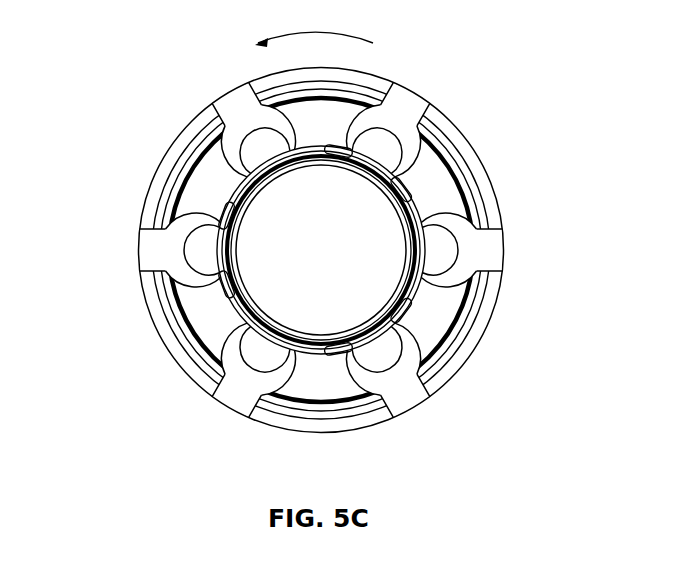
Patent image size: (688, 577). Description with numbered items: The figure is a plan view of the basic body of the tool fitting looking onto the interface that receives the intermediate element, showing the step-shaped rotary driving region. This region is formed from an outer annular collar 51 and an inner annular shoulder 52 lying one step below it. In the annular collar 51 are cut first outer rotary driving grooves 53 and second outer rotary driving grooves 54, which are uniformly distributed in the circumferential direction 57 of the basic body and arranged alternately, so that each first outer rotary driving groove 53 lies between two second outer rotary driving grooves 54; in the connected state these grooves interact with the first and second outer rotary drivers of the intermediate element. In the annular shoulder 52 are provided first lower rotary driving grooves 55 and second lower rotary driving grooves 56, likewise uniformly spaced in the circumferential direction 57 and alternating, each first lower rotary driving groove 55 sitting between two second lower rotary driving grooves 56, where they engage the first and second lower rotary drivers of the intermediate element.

The annular collar 51 is at (150, 162).
The annular shoulder 52 is at (446, 171).
The first outer rotary driving grooves 53 is at (231, 110).
The second outer rotary driving grooves 54 is at (404, 98).
The first lower rotary driving grooves 55 is at (280, 168).
The second lower rotary driving grooves 56 is at (362, 167).
The circumferential direction 57 is at (314, 23).